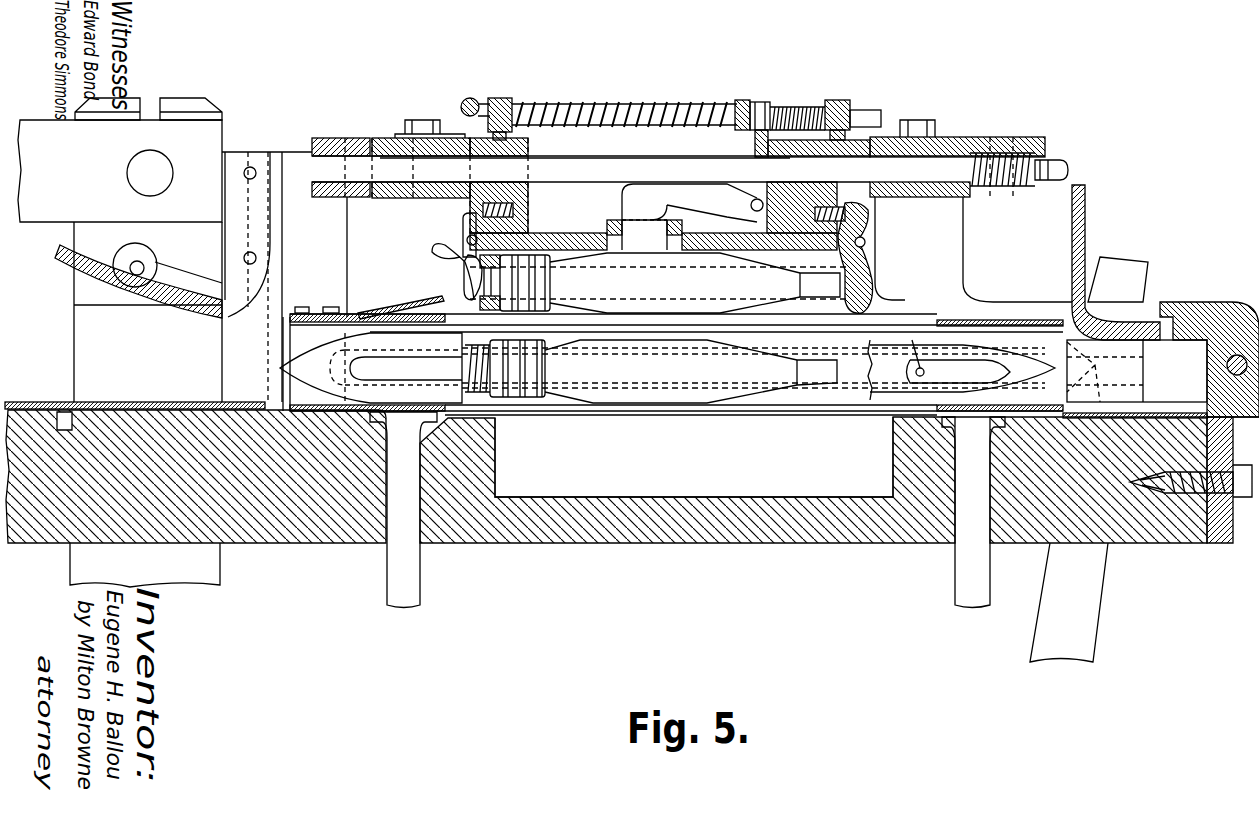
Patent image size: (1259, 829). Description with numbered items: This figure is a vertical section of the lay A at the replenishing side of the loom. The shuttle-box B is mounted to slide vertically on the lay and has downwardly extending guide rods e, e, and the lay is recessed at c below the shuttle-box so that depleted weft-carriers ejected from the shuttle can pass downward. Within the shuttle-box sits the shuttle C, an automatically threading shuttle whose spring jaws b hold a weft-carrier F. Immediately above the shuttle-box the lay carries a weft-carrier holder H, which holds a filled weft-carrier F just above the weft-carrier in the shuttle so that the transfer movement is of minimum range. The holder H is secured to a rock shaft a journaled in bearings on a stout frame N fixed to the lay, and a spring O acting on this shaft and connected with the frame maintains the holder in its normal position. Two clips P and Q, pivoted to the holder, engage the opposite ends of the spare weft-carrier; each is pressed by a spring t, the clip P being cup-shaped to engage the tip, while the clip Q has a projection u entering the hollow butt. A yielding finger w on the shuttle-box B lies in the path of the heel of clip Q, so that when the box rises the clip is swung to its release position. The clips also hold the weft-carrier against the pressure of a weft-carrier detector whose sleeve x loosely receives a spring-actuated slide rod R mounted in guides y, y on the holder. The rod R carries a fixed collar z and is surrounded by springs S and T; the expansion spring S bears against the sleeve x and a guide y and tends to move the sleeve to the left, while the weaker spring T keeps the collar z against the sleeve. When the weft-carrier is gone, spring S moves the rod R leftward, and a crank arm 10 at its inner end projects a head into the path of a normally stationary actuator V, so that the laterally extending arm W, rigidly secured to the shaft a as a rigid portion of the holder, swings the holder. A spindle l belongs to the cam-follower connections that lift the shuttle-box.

The crank arm 10 is at (463, 100).
The guide y is at (499, 98).
The spring T is at (652, 102).
The fixed collar z is at (738, 102).
The sleeve x is at (760, 102).
The expansion spring S is at (806, 107).
The spring-actuated slide rod R is at (868, 117).
The spring O is at (1010, 166).
The frame N is at (296, 177).
The laterally extending arm W is at (351, 140).
The actuator V is at (455, 243).
The spring t is at (513, 212).
The spindle l is at (633, 203).
The rock shaft a is at (610, 167).
The weft-carrier engaging clip Q is at (476, 257).
The yielding finger w is at (410, 302).
The projection u is at (500, 280).
The weft-carrier holder H is at (700, 253).
The weft-carrier engaging clip P is at (862, 258).
The shuttle-box B is at (1010, 322).
The shuttle C is at (312, 368).
The spring jaws b is at (470, 370).
The weft-carrier F is at (662, 367).
The recess c is at (685, 490).
The lay A is at (782, 530).
The guide rod e is at (390, 588).